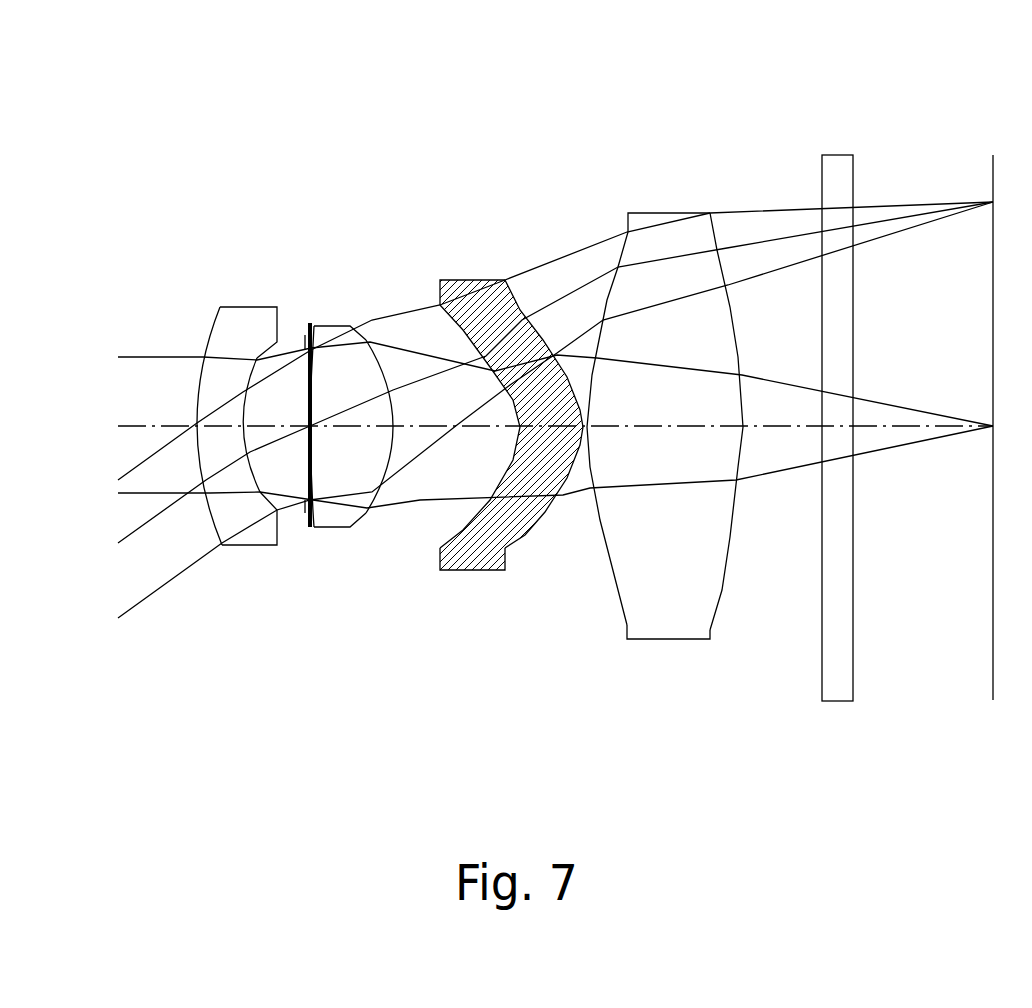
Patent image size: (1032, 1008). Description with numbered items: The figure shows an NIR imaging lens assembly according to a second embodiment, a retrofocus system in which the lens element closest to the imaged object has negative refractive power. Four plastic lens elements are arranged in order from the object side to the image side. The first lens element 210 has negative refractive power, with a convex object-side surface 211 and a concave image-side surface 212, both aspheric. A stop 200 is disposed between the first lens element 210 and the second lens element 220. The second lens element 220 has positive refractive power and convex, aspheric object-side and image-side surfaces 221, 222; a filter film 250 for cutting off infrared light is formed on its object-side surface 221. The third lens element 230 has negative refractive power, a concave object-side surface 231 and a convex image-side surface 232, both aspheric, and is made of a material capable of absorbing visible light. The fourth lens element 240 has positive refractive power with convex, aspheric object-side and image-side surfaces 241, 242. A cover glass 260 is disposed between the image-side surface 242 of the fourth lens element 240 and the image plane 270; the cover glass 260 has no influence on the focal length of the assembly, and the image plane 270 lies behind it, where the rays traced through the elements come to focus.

The stop 200 is at (303, 342).
The first lens element 210 is at (233, 340).
The object-side surface of first lens element 211 is at (192, 445).
The image-side surface of first lens element 212 is at (240, 443).
The second lens element 220 is at (335, 343).
The object-side surface of second lens element 221 is at (315, 443).
The image-side surface of second lens element 222 is at (393, 442).
The third lens element 230 is at (468, 300).
The object-side surface of third lens element 231 is at (510, 467).
The image-side surface of third lens element 232 is at (577, 462).
The fourth lens element 240 is at (665, 252).
The object-side surface of fourth lens element 241 is at (590, 487).
The image-side surface of fourth lens element 242 is at (735, 463).
The filter film 250 is at (309, 323).
The cover glass 260 is at (843, 178).
The image plane 270 is at (992, 182).